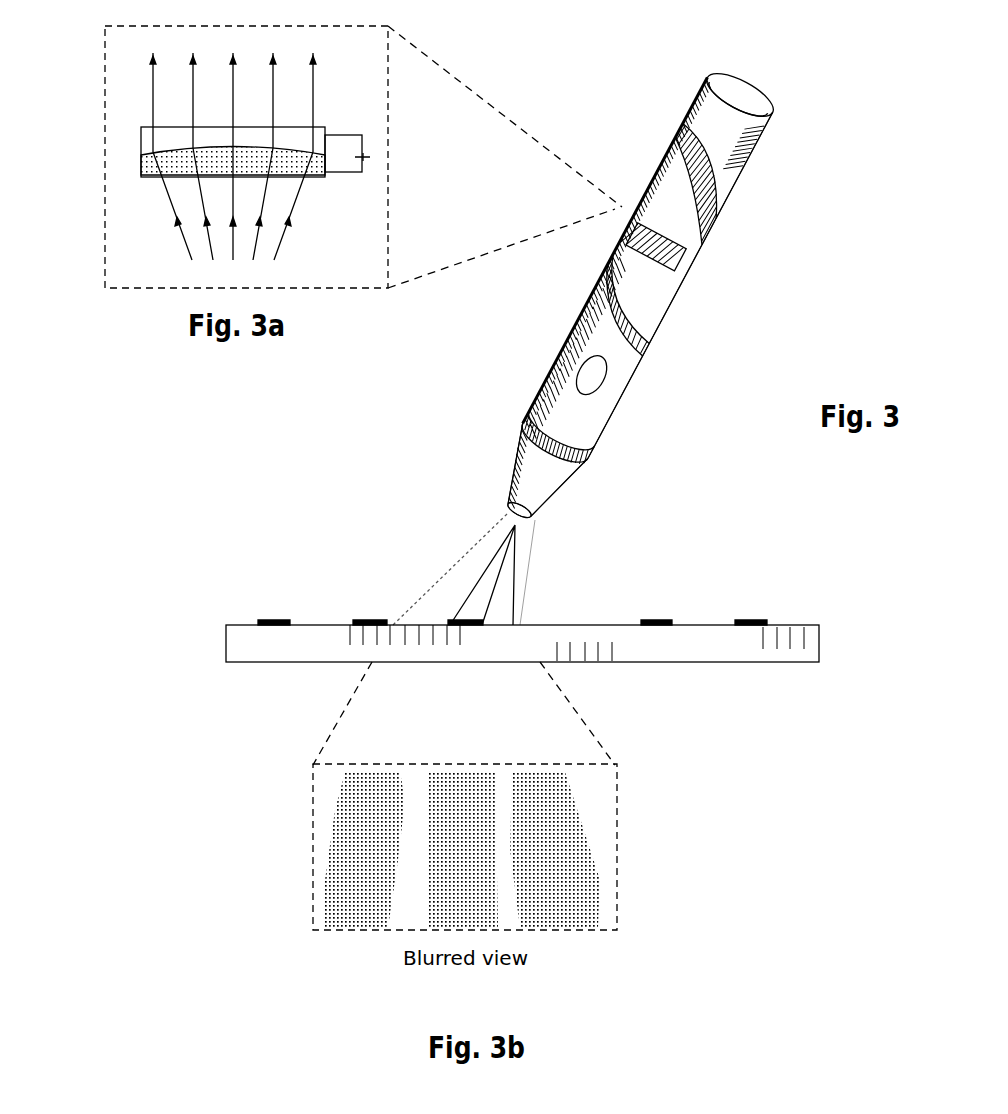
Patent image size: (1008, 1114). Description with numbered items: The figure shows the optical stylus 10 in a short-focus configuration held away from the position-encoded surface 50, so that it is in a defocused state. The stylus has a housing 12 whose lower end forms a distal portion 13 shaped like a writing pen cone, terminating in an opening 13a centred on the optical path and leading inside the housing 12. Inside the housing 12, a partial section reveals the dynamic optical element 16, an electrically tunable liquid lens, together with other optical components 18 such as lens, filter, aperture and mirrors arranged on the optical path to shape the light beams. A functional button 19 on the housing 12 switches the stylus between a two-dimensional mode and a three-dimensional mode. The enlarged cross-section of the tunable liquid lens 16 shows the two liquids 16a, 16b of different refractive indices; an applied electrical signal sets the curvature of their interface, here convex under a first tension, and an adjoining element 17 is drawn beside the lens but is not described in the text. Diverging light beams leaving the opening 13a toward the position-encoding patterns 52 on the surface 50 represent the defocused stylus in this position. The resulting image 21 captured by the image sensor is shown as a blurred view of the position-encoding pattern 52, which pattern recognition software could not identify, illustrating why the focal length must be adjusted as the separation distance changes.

In FIG. 3, the optical stylus 10 is at (527, 342).
In FIG. 3, the housing 12 is at (713, 177).
In FIG. 3, the distal portion 13 is at (565, 472).
In FIG. 3, the opening 13a is at (533, 520).
In FIG. 3, the dynamic optical element 16 is at (700, 253).
In FIG. 3A, the first liquid 16a is at (141, 135).
In FIG. 3A, the second liquid 16b is at (141, 163).
In FIG. 3A, the light source 17 is at (362, 157).
In FIG. 3, the other optical components 18 is at (685, 280).
In FIG. 3, the functional button 19 is at (596, 378).
In FIG. 3B, the image 21 is at (313, 805).
In FIG. 3, the position-encoded surface 50 is at (297, 557).
In FIG. 3, the position-encoding patterns 52 is at (763, 623).
In FIG. 3B, the position-encoding patterns 52 is at (577, 888).